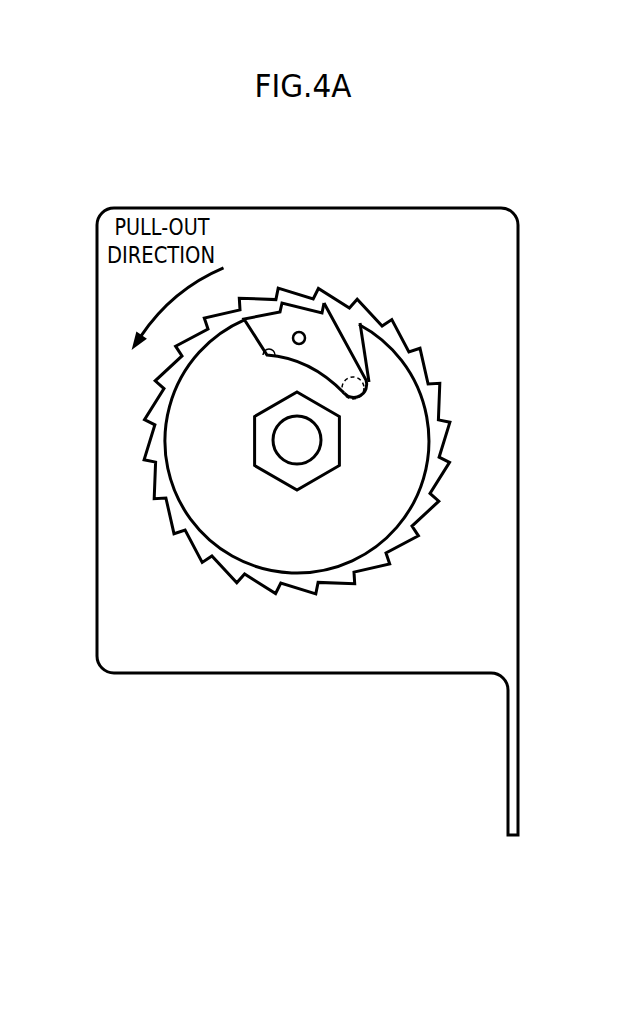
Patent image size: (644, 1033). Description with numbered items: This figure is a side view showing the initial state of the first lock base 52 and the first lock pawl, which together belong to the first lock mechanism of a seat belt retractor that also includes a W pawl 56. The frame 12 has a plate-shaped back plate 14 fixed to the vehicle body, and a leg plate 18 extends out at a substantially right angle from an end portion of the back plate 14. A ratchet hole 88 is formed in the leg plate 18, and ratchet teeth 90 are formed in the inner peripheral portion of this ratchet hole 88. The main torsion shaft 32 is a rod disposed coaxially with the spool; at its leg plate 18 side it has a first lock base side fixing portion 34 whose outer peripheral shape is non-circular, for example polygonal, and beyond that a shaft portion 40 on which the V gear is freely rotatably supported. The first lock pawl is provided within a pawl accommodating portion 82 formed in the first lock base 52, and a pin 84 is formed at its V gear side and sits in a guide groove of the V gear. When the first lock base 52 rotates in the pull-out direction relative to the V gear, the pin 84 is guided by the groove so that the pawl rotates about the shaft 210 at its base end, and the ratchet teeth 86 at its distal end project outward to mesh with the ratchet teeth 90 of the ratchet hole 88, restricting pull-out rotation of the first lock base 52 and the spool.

The frame 12 is at (307, 476).
The back plate 14 is at (508, 783).
The leg plate 18 is at (400, 230).
The main torsion shaft 32 is at (335, 466).
The first lock base side fixing portion 34 is at (322, 477).
The shaft portion 40 is at (292, 447).
The first lock base 52 is at (213, 530).
The W pawl 56 is at (324, 342).
The pawl accommodating portion 82 is at (267, 357).
The pin 84 is at (305, 310).
The ratchet teeth 86 is at (328, 305).
The ratchet hole 88 is at (288, 573).
The ratchet teeth 90 is at (368, 567).
The shaft 210 is at (350, 376).